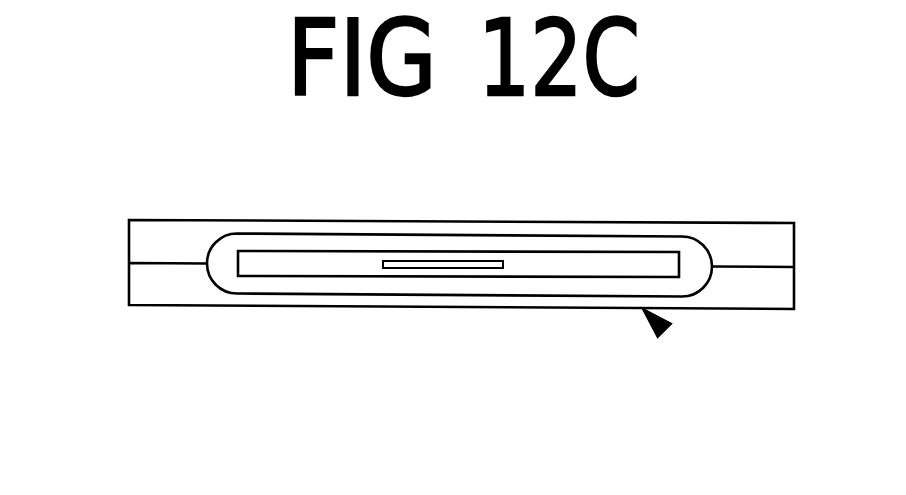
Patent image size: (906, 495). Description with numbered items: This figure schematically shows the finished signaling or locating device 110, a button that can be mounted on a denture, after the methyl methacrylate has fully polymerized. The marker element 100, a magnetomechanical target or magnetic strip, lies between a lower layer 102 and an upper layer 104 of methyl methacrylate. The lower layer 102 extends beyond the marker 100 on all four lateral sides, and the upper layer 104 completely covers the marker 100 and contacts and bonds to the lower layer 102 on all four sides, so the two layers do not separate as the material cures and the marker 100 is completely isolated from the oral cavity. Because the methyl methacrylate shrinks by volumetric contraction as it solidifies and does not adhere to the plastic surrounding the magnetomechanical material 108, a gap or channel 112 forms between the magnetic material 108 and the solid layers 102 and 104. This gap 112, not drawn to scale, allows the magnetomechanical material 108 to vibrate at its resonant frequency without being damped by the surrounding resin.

The marker element 100 is at (533, 265).
The lower layer 102 is at (197, 230).
The upper layer 104 is at (128, 298).
The magnetomechanical material 108 is at (467, 258).
The locator element 110 is at (665, 331).
The gap 112 is at (218, 270).